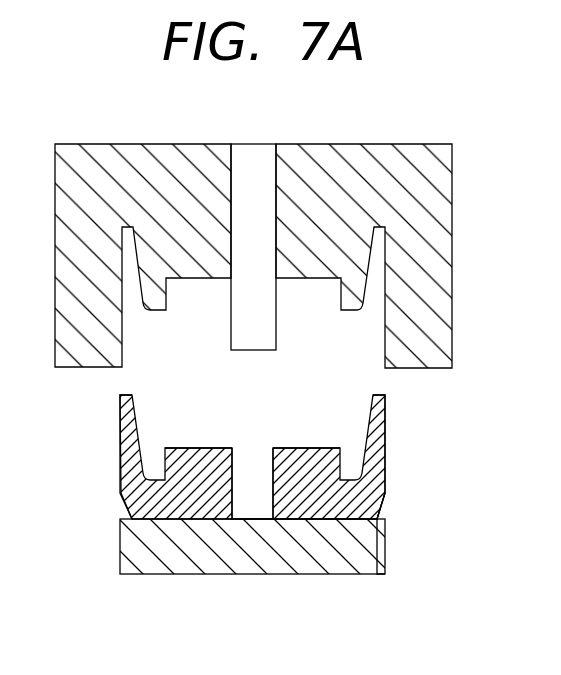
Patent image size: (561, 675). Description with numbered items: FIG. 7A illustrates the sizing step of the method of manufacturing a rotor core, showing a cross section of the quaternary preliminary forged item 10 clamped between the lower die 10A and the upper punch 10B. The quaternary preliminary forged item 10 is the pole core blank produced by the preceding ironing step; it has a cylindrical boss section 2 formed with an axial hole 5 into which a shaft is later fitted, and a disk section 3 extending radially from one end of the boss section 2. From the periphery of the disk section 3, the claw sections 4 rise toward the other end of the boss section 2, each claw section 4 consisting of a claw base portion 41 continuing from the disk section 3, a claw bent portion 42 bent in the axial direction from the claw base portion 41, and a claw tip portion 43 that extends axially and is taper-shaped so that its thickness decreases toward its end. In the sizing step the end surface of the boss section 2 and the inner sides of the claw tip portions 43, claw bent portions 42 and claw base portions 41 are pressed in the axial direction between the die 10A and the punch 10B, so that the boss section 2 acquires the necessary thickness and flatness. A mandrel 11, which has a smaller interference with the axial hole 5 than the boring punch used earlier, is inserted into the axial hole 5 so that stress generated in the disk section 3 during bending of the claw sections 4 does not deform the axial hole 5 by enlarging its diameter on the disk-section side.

The punch 10B is at (438, 218).
The mandrel 11 is at (268, 332).
The boss section 2 is at (303, 448).
The claw section 4 is at (505, 372).
The claw tip portion 43 is at (375, 402).
The claw bent portion 42 is at (375, 437).
The claw base portion 41 is at (373, 475).
The axial hole 5 is at (273, 491).
The disk section 3 is at (348, 508).
The quaternary preliminary forged item 10 is at (398, 505).
The die 10A is at (375, 543).